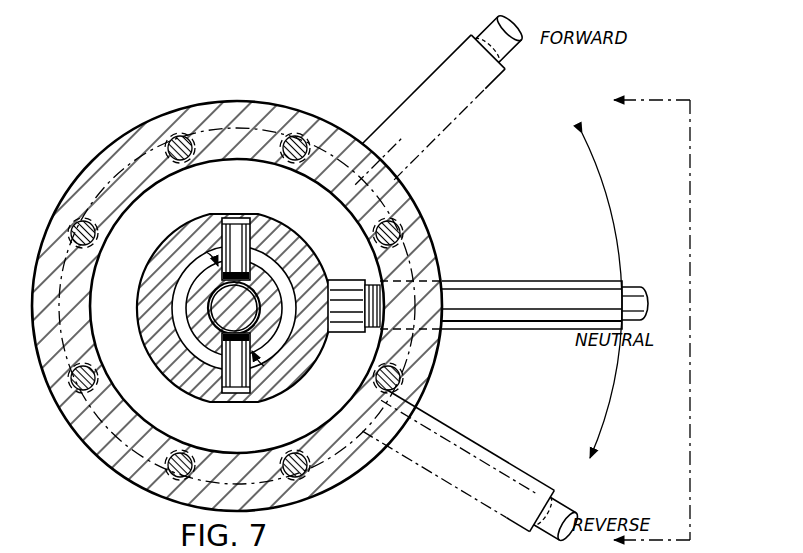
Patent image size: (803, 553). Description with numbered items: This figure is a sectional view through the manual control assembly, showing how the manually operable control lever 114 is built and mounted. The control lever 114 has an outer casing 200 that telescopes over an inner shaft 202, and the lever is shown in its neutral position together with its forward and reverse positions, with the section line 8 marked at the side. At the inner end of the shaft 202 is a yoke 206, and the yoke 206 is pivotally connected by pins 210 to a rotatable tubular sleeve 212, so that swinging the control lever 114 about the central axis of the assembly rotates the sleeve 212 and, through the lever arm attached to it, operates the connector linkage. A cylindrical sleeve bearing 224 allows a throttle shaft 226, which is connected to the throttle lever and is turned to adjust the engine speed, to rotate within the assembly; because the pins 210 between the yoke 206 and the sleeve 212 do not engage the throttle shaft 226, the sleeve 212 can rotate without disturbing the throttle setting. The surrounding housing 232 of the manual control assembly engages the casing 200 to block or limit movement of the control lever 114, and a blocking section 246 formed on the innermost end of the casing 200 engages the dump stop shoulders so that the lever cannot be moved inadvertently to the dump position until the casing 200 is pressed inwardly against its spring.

The section line 8- 8 is at (639, 321).
The control lever 114 is at (550, 262).
The outer casing 200 is at (579, 281).
The inner shaft 202 is at (648, 302).
The yoke 206 is at (156, 252).
The pins 210 is at (246, 203).
The tubular sleeve 212 is at (257, 254).
The sleeve bearing 224 is at (198, 248).
The throttle shaft 226 is at (272, 369).
The housing 232 is at (441, 364).
The blocking section 246 is at (415, 280).